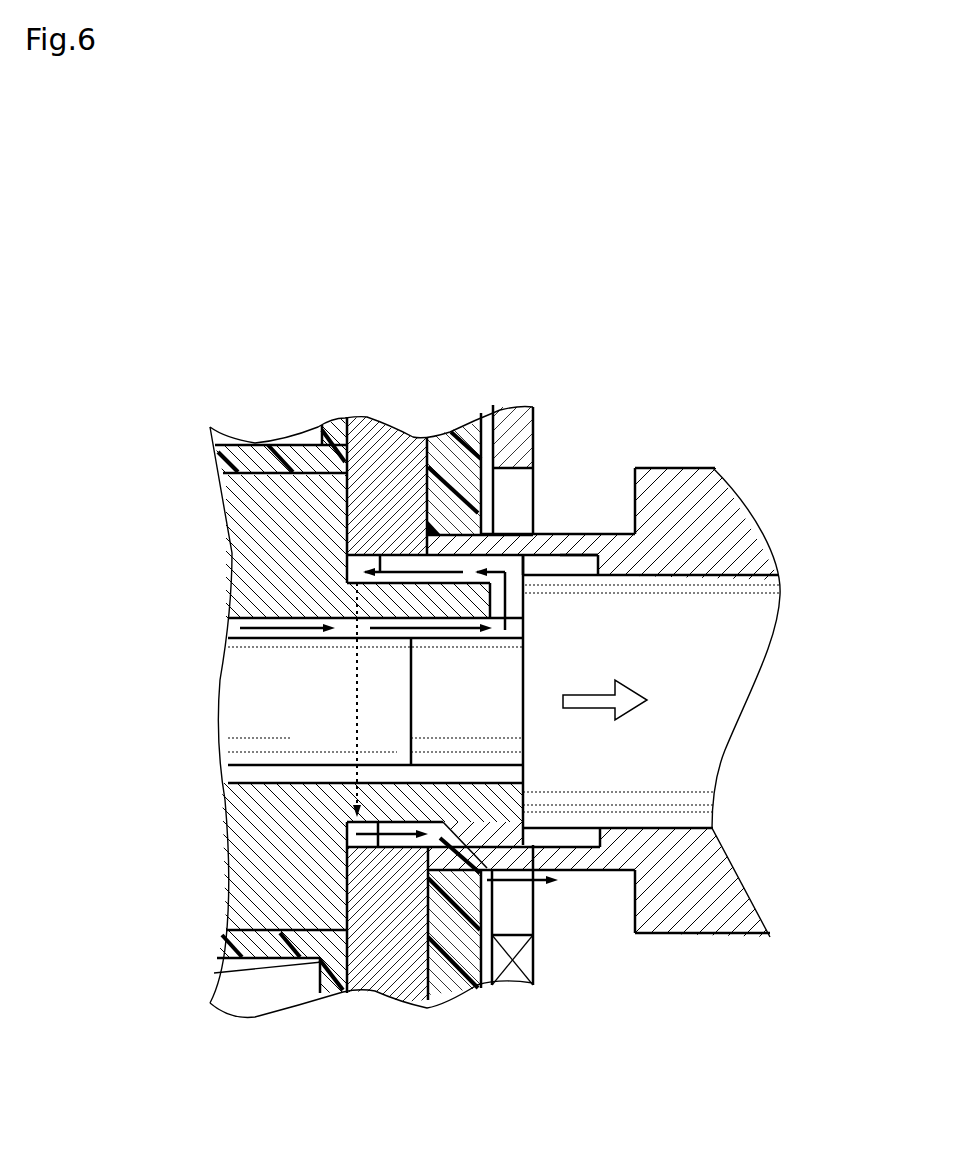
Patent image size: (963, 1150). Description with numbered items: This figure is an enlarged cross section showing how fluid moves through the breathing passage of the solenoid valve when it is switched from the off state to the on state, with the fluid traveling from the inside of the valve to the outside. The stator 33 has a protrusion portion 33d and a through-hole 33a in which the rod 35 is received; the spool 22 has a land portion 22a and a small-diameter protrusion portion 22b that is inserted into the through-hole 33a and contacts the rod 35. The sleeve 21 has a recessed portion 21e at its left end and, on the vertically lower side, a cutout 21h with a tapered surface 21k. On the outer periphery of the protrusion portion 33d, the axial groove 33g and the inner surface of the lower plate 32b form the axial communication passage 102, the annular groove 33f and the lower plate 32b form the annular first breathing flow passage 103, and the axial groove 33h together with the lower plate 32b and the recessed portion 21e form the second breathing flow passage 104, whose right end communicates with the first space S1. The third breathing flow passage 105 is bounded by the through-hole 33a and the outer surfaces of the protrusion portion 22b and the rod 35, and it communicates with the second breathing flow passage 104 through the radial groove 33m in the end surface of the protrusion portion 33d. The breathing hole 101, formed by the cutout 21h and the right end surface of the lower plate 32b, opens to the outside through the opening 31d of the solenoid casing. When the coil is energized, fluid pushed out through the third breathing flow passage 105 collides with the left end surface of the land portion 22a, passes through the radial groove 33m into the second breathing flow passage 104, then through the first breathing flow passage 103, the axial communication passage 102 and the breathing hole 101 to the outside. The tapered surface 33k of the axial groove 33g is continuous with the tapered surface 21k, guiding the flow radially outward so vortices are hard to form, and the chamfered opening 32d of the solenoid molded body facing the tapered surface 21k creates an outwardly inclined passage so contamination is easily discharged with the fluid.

The stator 33 is at (263, 455).
The lower plate 32b is at (347, 418).
The protrusion portion 33d is at (396, 600).
The axial groove 33h is at (440, 513).
The second breathing flow passage 104 is at (533, 410).
The radial groove 33m is at (538, 563).
The recessed portion 21e is at (588, 560).
The first space S1 is at (568, 563).
The sleeve 21 is at (705, 458).
The spool 22 is at (722, 556).
The third breathing flow passage 105 is at (350, 580).
The through-hole 33a is at (228, 625).
The rod 35 is at (240, 684).
The annular groove 33f is at (350, 813).
The first breathing flow passage 103 is at (358, 850).
The axial groove 33g is at (395, 849).
The axial communication passage 102 is at (320, 962).
The tapered surface 33k is at (402, 875).
The breathing hole 101 is at (445, 857).
The cutout 21h is at (483, 983).
The tapered surface 21k is at (530, 983).
The opening 31d is at (528, 918).
The opening 32d is at (503, 873).
The protrusion portion 22b is at (643, 912).
The land portion 22a is at (695, 763).